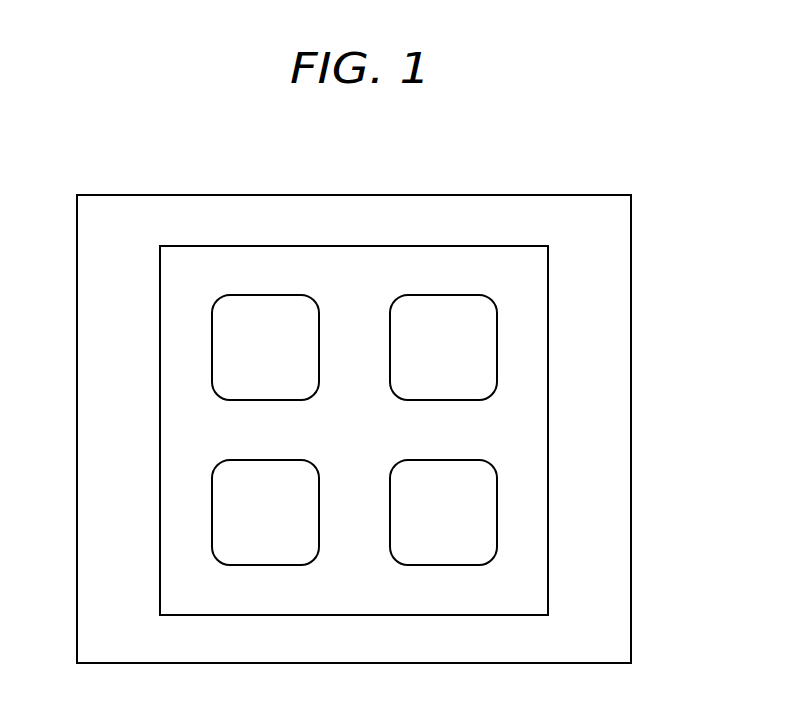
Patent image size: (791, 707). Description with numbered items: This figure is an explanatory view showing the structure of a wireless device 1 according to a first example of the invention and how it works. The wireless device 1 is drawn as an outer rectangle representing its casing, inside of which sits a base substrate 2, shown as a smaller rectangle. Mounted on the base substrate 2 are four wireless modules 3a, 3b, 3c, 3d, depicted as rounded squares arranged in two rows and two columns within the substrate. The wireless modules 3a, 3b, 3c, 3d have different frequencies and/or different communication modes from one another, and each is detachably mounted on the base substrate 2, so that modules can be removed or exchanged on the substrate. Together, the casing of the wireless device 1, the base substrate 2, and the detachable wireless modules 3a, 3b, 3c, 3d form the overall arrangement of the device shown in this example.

The wireless device 1 is at (632, 222).
The base substrate 2 is at (548, 296).
The wireless module 3a is at (243, 348).
The wireless module 3b is at (243, 521).
The wireless module 3c is at (464, 348).
The wireless module 3d is at (464, 521).